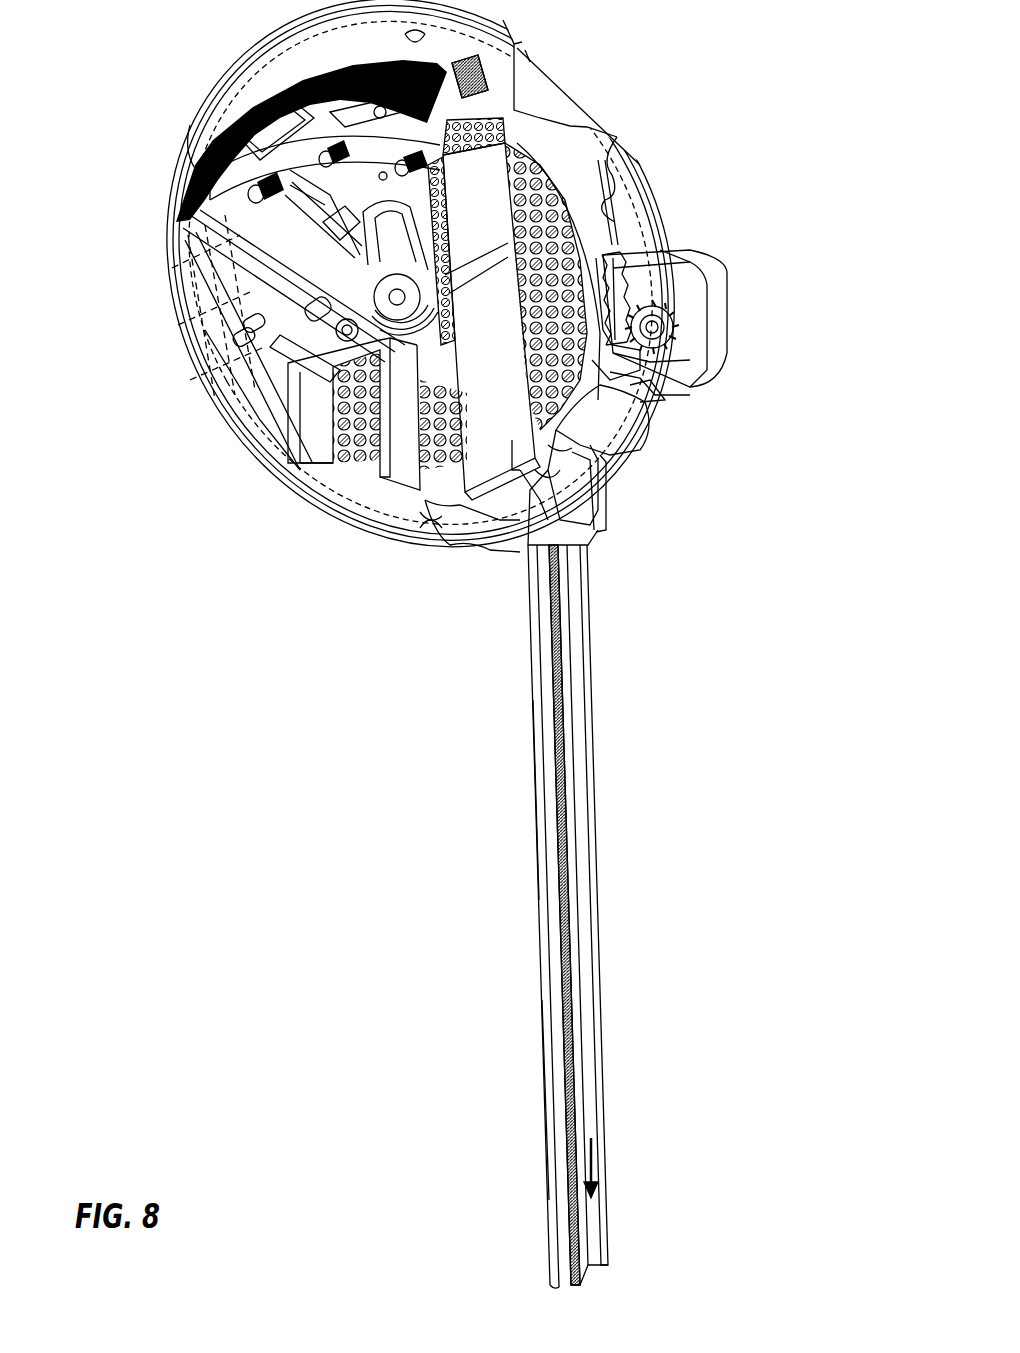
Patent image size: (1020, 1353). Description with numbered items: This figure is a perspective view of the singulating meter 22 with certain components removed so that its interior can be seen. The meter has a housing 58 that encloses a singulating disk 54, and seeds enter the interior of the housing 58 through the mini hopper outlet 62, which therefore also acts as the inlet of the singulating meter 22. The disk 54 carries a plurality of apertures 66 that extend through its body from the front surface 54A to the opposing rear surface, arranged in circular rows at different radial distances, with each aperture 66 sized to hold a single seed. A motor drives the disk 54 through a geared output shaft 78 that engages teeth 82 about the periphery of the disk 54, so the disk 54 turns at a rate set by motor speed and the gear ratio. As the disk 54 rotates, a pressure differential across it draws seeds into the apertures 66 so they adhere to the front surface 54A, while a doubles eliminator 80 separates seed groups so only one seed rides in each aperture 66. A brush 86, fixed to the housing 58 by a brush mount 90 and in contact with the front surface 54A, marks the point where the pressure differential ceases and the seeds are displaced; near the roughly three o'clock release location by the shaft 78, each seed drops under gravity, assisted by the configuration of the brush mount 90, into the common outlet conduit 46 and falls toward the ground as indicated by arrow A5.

The singulating meter 22 is at (776, 192).
The housing 58 is at (633, 167).
The teeth 82 is at (623, 273).
The geared output shaft 78 is at (677, 340).
The singulating disk 54 is at (590, 383).
The apertures 66 is at (563, 393).
The front surface 54A is at (553, 430).
The doubles eliminator 80 is at (270, 218).
The mini hopper outlet 62 is at (318, 442).
The brush mount 90 is at (497, 462).
The brush 86 is at (533, 463).
The outlet conduit 46 is at (585, 1037).
The arrow A5 is at (593, 1162).